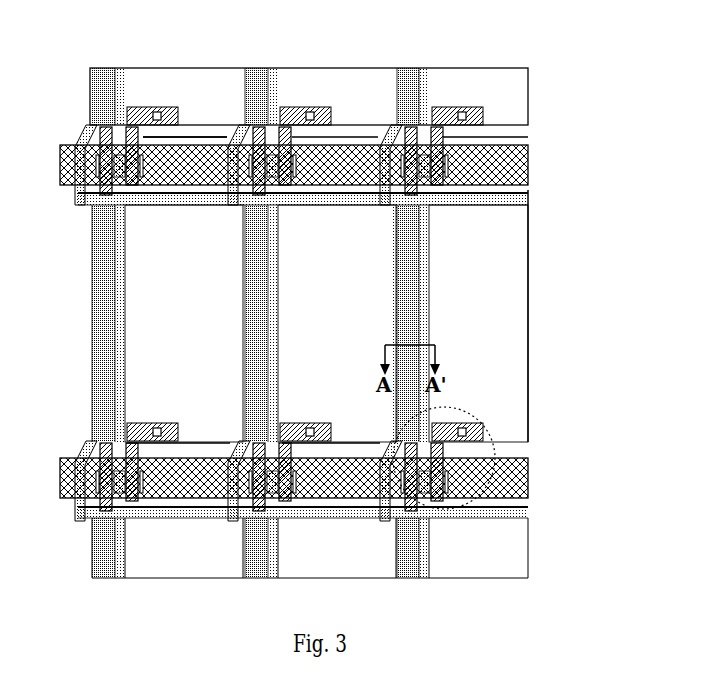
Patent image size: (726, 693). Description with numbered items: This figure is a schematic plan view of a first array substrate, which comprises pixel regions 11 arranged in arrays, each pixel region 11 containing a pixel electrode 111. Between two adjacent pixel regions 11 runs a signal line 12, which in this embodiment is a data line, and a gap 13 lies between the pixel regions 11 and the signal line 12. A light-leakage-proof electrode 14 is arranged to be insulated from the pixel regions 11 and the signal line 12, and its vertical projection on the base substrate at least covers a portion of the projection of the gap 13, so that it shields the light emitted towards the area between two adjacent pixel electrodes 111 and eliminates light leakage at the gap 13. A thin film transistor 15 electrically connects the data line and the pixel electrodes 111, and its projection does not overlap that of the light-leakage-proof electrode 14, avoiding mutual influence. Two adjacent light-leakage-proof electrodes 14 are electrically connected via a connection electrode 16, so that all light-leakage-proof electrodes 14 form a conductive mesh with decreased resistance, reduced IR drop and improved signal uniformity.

The pixel region 11 is at (520, 98).
The pixel electrode 111 is at (279, 314).
The signal line 12 is at (528, 137).
The gap 13 is at (505, 448).
The light-leakage-proof electrode 14 is at (420, 252).
The thin film transistor 15 is at (490, 481).
The connection electrode 16 is at (500, 199).